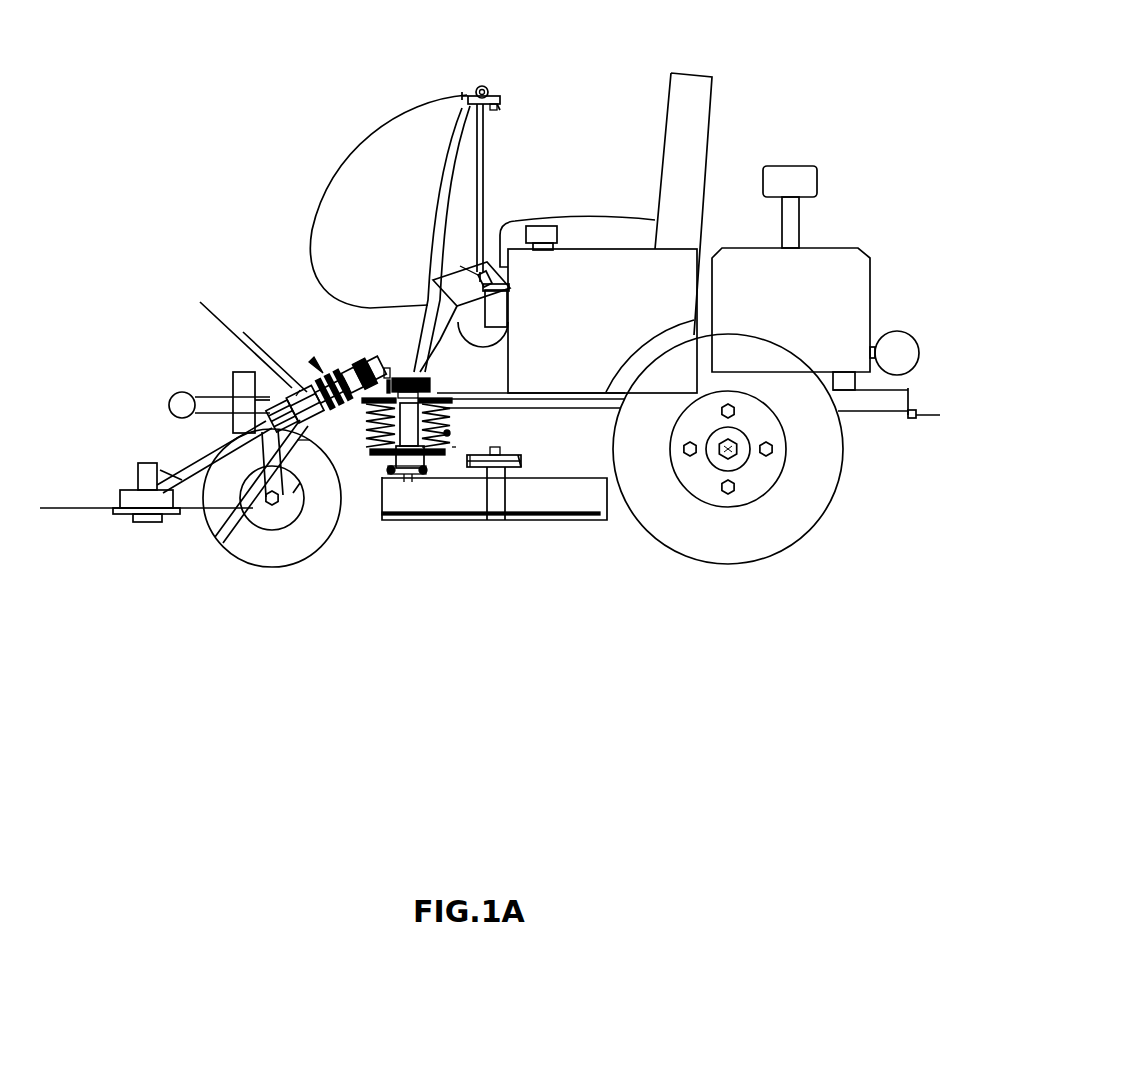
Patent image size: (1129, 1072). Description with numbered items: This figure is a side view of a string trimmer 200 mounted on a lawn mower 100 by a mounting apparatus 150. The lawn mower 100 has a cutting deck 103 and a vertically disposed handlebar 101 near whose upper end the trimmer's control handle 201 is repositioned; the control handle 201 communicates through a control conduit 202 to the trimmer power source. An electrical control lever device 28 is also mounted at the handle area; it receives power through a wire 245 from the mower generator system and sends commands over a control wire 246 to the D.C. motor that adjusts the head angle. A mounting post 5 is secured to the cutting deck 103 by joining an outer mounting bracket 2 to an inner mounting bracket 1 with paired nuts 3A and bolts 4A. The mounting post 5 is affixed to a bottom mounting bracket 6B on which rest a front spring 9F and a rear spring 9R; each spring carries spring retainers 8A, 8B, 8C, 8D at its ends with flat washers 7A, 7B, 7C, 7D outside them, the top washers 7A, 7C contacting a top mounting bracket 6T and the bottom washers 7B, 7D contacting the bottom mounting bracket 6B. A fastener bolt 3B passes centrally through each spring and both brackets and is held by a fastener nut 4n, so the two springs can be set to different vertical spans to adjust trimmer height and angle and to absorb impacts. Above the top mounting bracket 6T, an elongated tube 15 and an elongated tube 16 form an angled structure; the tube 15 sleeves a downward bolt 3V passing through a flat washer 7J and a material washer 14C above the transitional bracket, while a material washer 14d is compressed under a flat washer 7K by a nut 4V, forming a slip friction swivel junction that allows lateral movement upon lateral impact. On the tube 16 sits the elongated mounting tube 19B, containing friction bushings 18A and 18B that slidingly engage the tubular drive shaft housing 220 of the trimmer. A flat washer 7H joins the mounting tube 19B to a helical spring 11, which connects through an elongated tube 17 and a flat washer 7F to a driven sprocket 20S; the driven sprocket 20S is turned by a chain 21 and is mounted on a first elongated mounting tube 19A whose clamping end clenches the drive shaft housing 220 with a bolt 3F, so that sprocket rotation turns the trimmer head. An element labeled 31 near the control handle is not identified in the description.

The lawn mower 100 is at (670, 267).
The handlebar 101 is at (480, 200).
The cutting deck 103 is at (416, 484).
The elongated tube 15 is at (508, 260).
The fastener nut 4V is at (628, 399).
The top mounting bracket 6T is at (440, 405).
The top bracket 31 is at (500, 98).
The control handle 201 is at (472, 90).
The electrical control lever device 28 is at (487, 107).
The wire 245 is at (472, 162).
The control wire 246 is at (457, 165).
The control conduit 202 is at (345, 172).
The material washer 14C is at (500, 327).
The material washer 14d is at (415, 376).
The bolt 3V is at (490, 287).
The flat washer 7J is at (490, 308).
The flat washer 7K is at (432, 384).
The elongated tube 16 is at (402, 373).
The friction bushing 18B is at (410, 370).
The elongated mounting tube 19B is at (372, 358).
The flat washer 7H is at (362, 372).
The friction bushing 18A is at (350, 382).
The flat washer 7A is at (345, 425).
The flat washer 7F is at (233, 392).
The bolt 3F is at (275, 410).
The driven sprocket 20S is at (168, 400).
The elongated tube 17 is at (293, 395).
The helical spring 11 is at (296, 396).
The mounting apparatus 150 is at (315, 363).
The flat washer 7B is at (262, 662).
The first elongated mounting tube 19A is at (240, 483).
The tubular drive shaft housing 220 is at (188, 464).
The spring retainer 8A is at (323, 453).
The chain 21 is at (220, 543).
The front spring 9F is at (305, 537).
The string trimmer 200 is at (100, 487).
The spring retainer 8B is at (372, 455).
The spring retainer 8C is at (452, 405).
The rear spring 9R is at (450, 433).
The nuts 3A is at (450, 462).
The outer mounting bracket 2 is at (398, 482).
The inner mounting bracket 1 is at (408, 486).
The bolts 4A is at (425, 476).
The mounting post 5 is at (426, 492).
The flat washer 7D is at (508, 472).
The bottom mounting bracket 6B is at (486, 520).
The fastener nut 4n is at (522, 513).
The flat washer 7C is at (458, 413).
The fastener bolt 3B is at (634, 480).
The spring retainer 8D is at (475, 460).